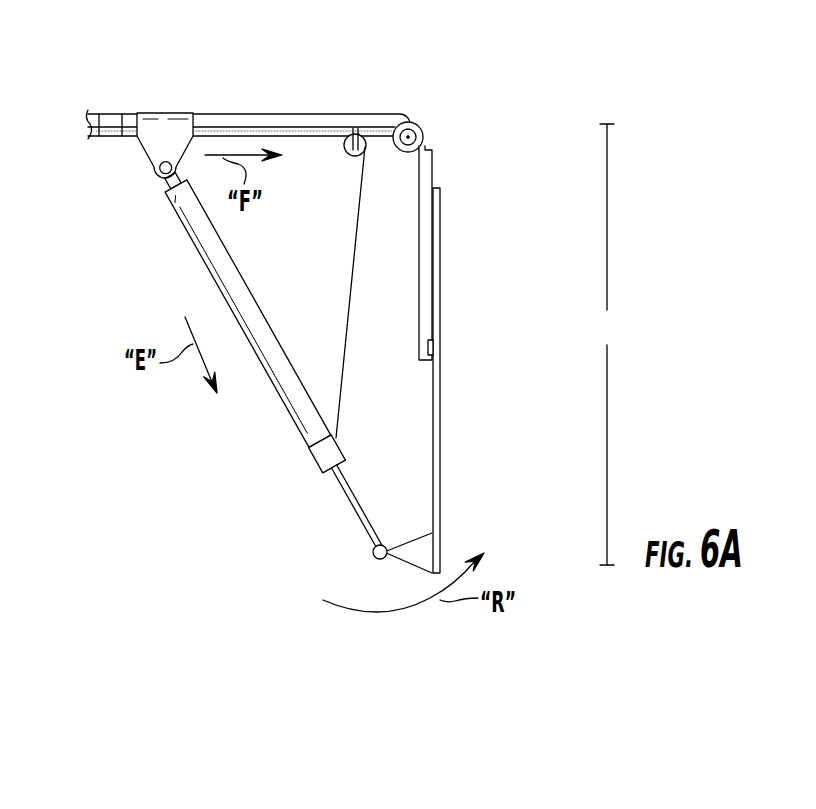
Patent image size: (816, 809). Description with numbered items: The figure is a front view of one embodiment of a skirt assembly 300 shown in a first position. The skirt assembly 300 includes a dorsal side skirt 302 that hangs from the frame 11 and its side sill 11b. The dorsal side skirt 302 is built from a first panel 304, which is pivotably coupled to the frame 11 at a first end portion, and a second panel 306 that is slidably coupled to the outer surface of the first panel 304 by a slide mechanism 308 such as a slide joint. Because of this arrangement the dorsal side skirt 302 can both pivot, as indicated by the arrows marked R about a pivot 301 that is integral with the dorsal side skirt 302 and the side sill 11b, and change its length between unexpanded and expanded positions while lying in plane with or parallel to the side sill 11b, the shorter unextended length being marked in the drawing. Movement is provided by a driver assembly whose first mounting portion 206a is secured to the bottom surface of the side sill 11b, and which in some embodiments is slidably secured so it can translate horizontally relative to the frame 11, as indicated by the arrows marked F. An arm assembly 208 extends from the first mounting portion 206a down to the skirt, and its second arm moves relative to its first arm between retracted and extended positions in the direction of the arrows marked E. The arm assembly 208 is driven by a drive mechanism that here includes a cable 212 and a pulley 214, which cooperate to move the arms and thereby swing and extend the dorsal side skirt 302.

The frame 11 is at (310, 114).
The side sill 11b is at (100, 122).
The cable 212 is at (122, 112).
The first mounting portion 206a is at (172, 121).
The arm assembly 208 is at (200, 266).
The pulley 214 is at (350, 143).
The pivot 301 is at (426, 131).
The dorsal side skirt 302 is at (434, 318).
The first panel 304 is at (422, 230).
The second panel 306 is at (432, 449).
The slide mechanism 308 is at (433, 348).
The skirt assembly 300 is at (503, 313).